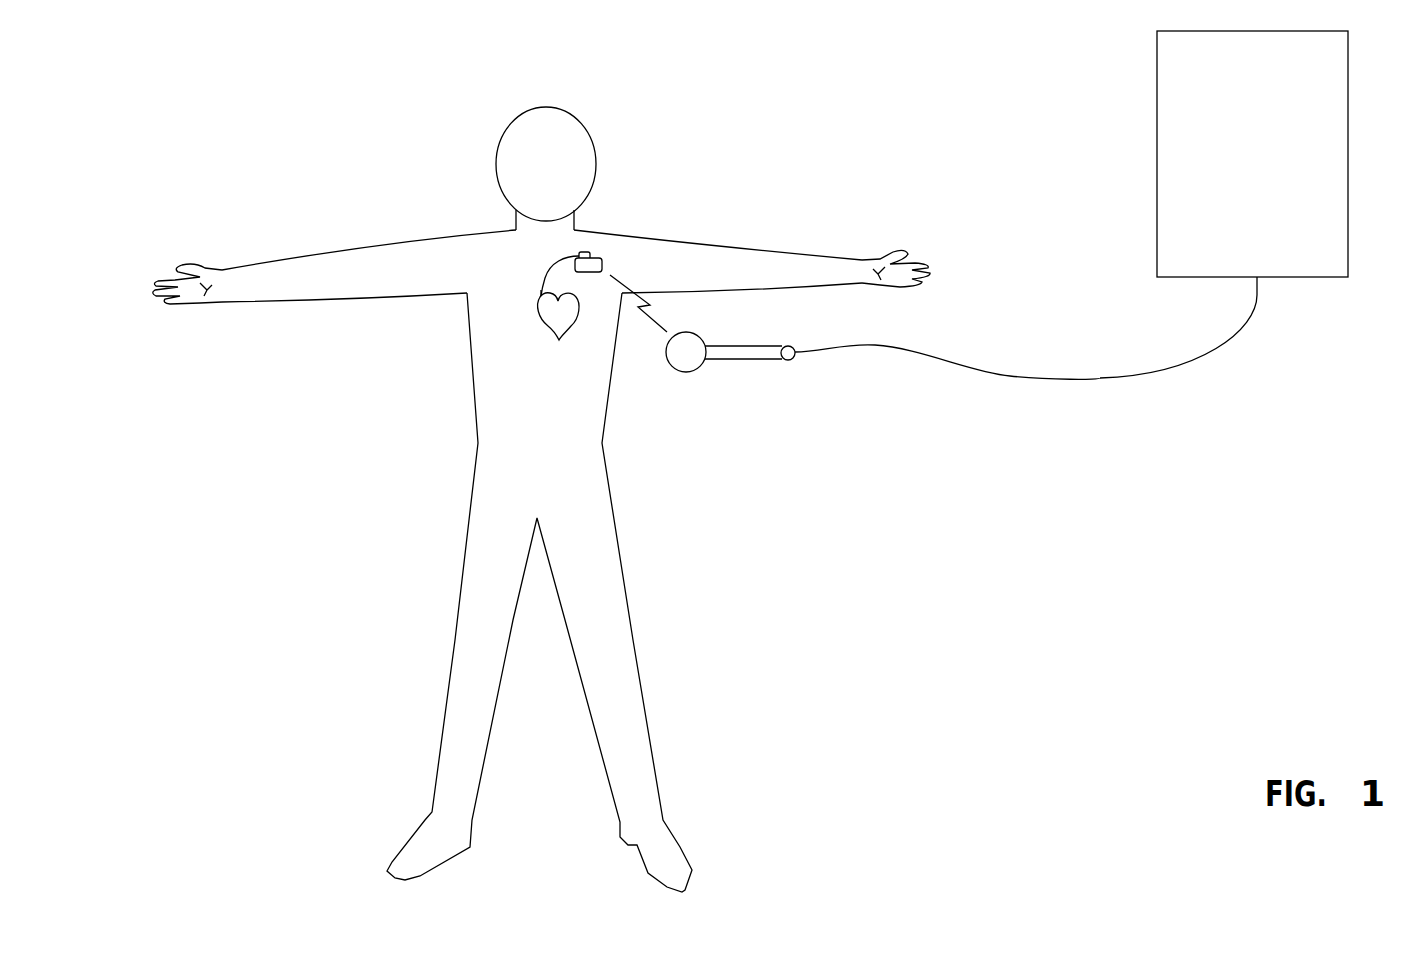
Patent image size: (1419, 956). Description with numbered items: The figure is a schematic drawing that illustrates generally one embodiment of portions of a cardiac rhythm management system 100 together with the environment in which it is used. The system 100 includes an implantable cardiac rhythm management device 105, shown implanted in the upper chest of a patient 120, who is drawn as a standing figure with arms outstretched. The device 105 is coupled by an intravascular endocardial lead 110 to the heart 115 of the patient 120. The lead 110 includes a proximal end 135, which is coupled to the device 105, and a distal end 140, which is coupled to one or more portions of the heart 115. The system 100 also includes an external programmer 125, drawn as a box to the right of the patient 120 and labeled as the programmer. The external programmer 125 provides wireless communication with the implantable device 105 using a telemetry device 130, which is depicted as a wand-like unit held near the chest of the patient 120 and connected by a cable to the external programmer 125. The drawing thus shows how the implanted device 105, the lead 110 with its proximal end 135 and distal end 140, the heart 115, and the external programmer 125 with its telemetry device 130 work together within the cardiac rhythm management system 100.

The cardiac rhythm management system 100 is at (1082, 578).
The implantable cardiac rhythm management device 105 is at (590, 253).
The intravascular endocardial lead 110 is at (545, 271).
The heart 115 is at (547, 330).
The patient 120 is at (472, 406).
The external programmer 125 is at (1348, 199).
The telemetry device 130 is at (686, 372).
The proximal end 135 is at (579, 253).
The distal end 140 is at (541, 296).